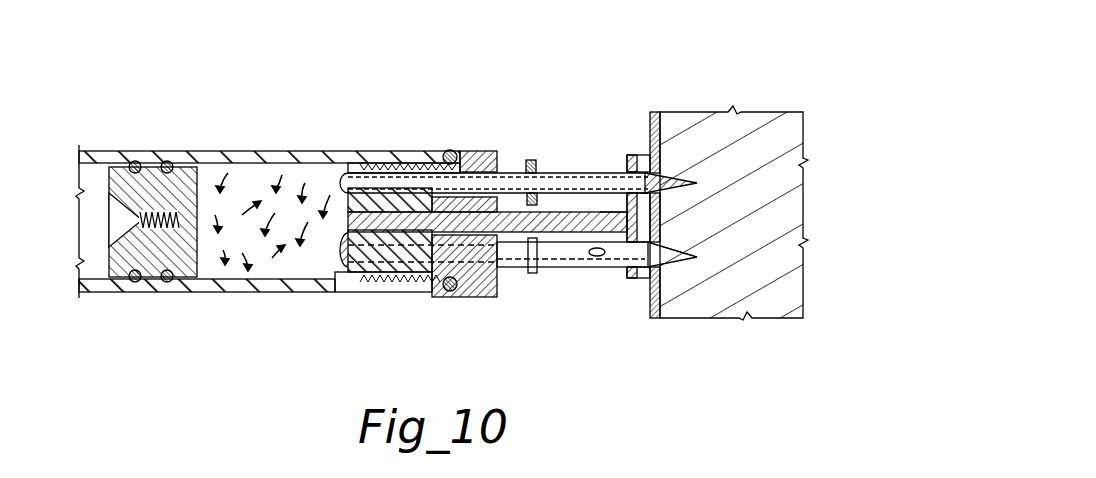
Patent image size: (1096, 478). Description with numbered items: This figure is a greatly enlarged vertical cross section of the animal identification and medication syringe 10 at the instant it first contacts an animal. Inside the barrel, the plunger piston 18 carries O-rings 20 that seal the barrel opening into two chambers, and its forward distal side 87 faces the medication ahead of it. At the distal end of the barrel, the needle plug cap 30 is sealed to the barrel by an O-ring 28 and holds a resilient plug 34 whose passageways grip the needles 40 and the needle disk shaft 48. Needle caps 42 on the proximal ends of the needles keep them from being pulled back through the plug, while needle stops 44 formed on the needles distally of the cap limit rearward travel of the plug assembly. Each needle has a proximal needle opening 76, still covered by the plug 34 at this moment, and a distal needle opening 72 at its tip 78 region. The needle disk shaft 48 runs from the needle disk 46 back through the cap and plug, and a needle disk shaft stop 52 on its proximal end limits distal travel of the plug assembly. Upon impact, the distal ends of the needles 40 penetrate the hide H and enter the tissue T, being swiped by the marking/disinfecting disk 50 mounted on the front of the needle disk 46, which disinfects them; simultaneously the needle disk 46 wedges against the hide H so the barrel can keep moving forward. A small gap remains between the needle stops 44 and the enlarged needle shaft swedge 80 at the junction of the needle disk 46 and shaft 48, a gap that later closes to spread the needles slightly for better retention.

The animal identification and medication syringe 10 is at (262, 98).
The plunger piston 18 is at (158, 255).
The O-rings 20 is at (167, 162).
The distal side of the piston 87 is at (209, 166).
The needle caps 42 is at (323, 150).
The proximal needle opening 76 is at (373, 160).
The resilient plug 34 is at (390, 275).
The O-ring 28 is at (447, 150).
The needle plug cap 30 is at (480, 298).
The needle disk shaft stop 52 is at (345, 226).
The distal needle opening 72 is at (597, 172).
The needles 40 is at (565, 232).
The needle shaft swedge 80 is at (612, 218).
The needle stops 44 is at (529, 158).
The needle disk shaft 48 is at (513, 268).
The pointed tip 78 is at (697, 259).
The marking/disinfecting disk 50 is at (643, 155).
The needle disk 46 is at (630, 280).
The hide H is at (659, 130).
The tissue T is at (763, 127).